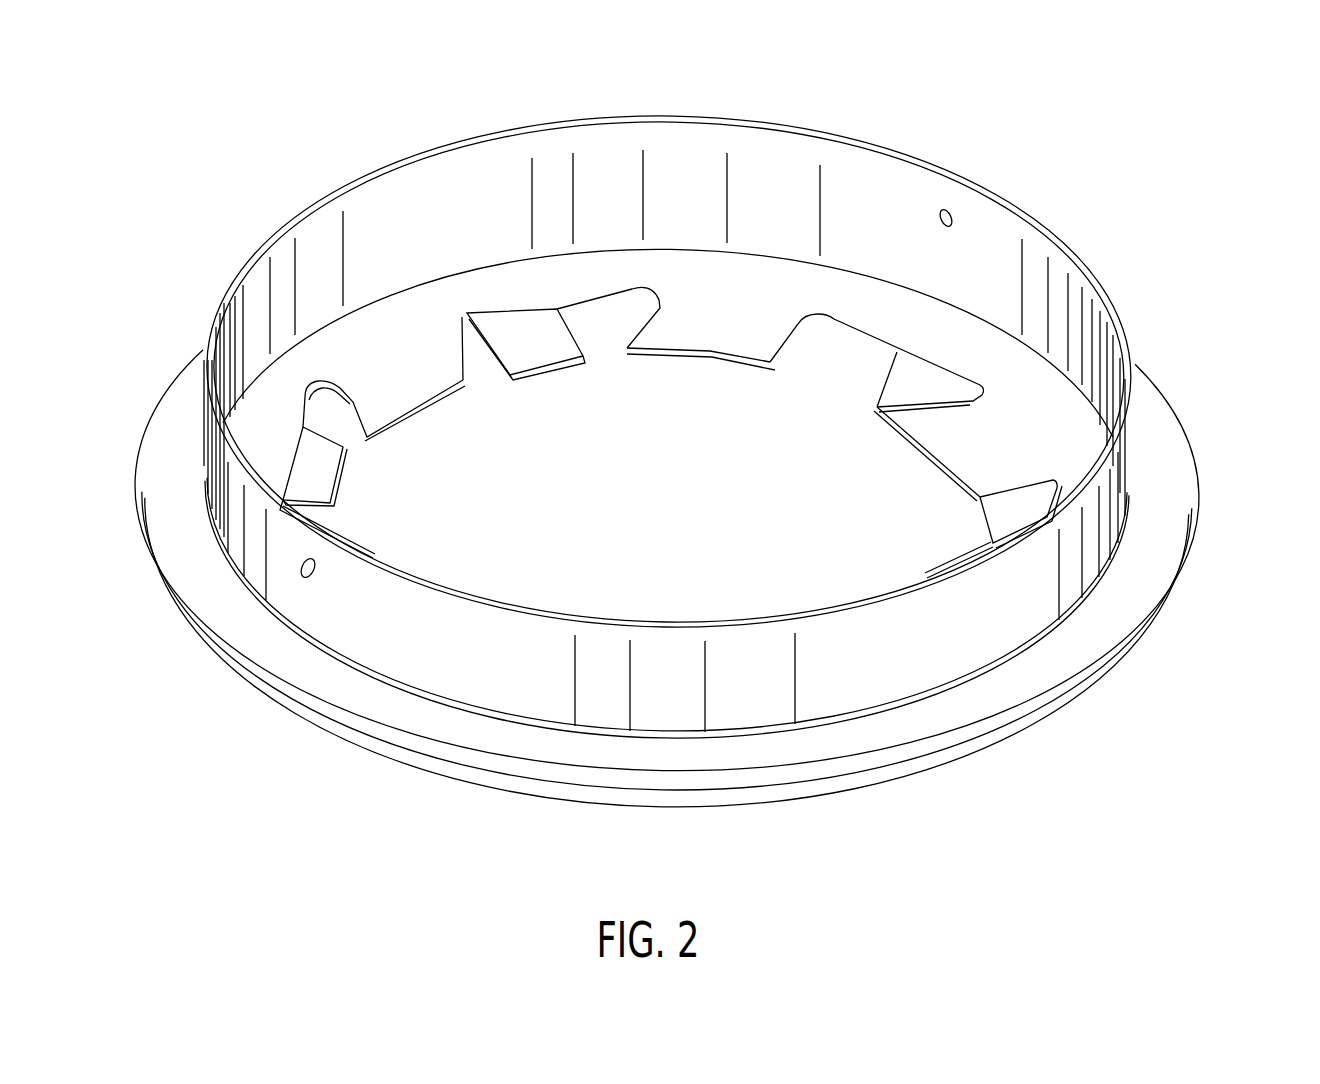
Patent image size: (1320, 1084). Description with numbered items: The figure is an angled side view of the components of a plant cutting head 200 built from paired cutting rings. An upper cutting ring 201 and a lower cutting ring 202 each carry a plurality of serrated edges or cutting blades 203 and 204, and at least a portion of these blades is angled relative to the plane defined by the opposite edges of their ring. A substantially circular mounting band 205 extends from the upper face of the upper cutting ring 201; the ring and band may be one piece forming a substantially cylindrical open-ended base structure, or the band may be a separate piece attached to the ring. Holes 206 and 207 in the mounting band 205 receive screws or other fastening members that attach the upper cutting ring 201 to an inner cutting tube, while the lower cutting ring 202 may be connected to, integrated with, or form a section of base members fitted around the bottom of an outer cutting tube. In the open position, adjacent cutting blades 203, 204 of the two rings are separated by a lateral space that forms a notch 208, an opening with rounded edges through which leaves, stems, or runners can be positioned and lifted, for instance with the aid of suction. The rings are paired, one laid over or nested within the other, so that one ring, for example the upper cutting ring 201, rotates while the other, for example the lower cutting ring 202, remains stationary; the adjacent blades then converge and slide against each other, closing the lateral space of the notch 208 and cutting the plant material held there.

The plant cutting head 200 is at (1122, 156).
The upper cutting ring 201 is at (1007, 427).
The lower cutting ring 202 is at (987, 720).
The cutting blades 203 is at (733, 313).
The cutting blades 204 is at (533, 333).
The mounting band 205 is at (1070, 525).
The hole 206 is at (303, 580).
The hole 207 is at (950, 208).
The notch 208 is at (613, 320).